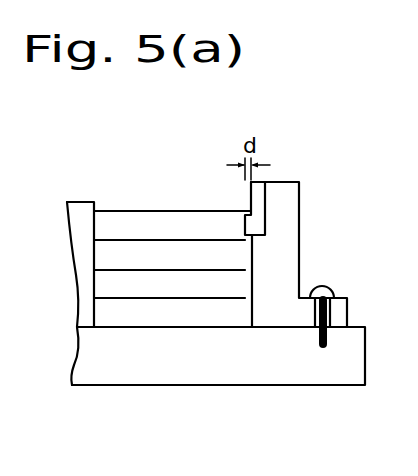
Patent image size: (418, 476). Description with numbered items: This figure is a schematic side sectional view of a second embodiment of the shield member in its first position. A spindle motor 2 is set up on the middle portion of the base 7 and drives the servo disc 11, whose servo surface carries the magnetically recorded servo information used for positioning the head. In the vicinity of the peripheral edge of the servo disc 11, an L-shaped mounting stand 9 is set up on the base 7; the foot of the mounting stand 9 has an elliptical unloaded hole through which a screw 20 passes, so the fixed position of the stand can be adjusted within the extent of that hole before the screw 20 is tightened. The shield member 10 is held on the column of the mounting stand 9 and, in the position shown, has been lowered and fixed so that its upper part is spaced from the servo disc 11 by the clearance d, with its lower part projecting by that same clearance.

The spindle motor 2 is at (81, 200).
The base 7 is at (260, 387).
The mounting stand 9 is at (299, 180).
The shield member 10 is at (267, 181).
The servo disc 11 is at (143, 211).
The screw 20 is at (330, 288).